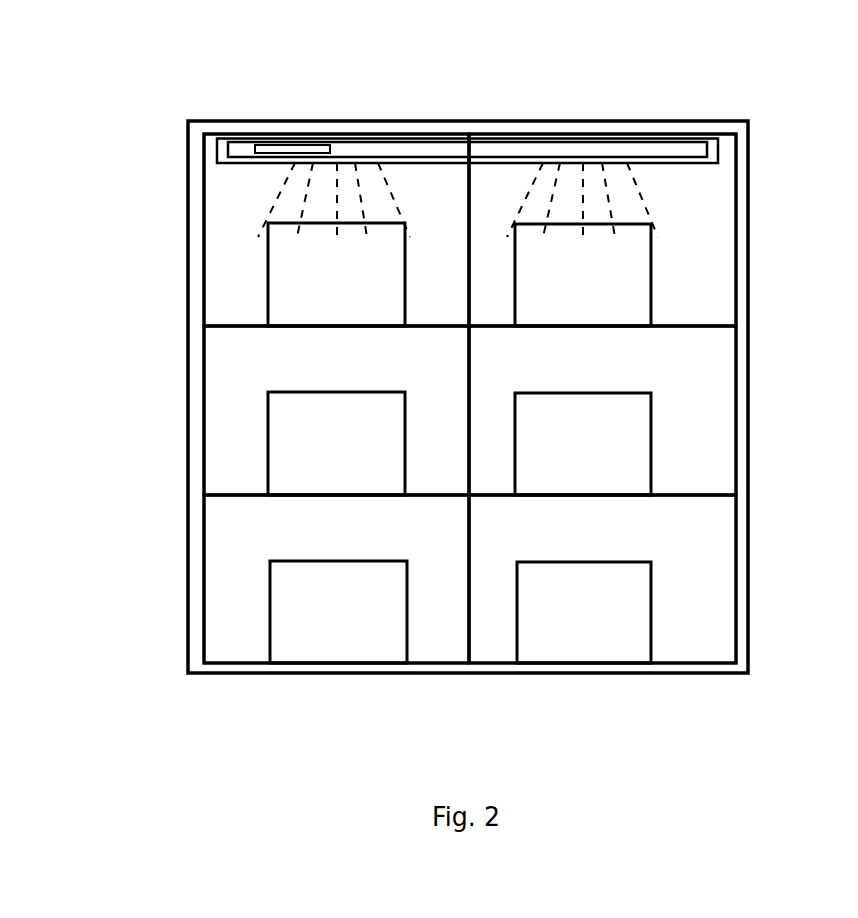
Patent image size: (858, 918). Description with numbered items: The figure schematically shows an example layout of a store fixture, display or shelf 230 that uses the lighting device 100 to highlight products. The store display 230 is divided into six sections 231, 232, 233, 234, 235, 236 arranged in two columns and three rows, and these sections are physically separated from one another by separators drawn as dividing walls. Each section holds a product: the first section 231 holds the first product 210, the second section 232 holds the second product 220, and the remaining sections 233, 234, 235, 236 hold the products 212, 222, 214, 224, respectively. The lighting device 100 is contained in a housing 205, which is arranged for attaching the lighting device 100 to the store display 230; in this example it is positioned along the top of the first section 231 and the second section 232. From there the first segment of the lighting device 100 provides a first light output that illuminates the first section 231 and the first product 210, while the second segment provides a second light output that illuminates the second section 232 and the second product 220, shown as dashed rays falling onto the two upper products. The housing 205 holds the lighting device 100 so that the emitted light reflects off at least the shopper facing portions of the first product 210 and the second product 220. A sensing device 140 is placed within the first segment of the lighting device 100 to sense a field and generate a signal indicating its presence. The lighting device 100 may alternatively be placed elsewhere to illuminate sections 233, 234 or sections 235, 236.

The lighting device 100 is at (508, 139).
The sensing device 140 is at (333, 144).
The housing 205 is at (746, 141).
The store display 230 is at (187, 134).
The first product 210 is at (268, 290).
The product 212 is at (268, 446).
The product 214 is at (270, 612).
The second product 220 is at (651, 295).
The product 222 is at (651, 450).
The product 224 is at (652, 612).
The first section 231 is at (218, 297).
The second section 232 is at (705, 302).
The section 233 is at (218, 436).
The section 234 is at (705, 457).
The section 235 is at (218, 607).
The section 236 is at (705, 625).